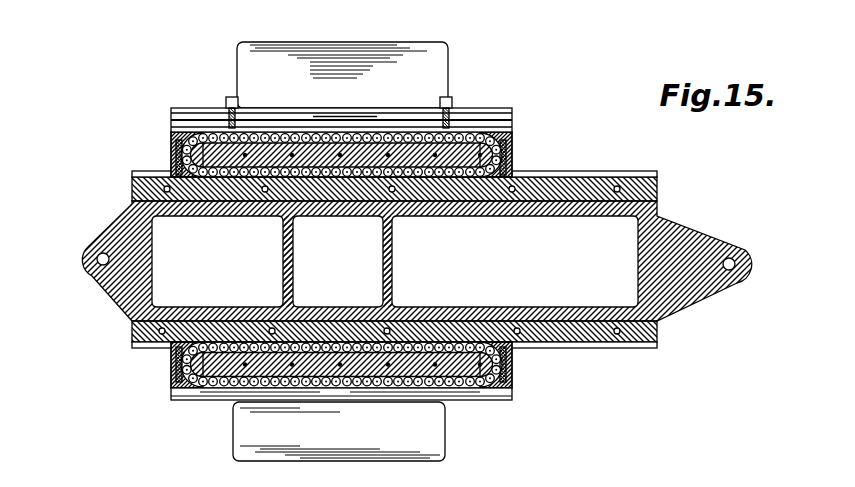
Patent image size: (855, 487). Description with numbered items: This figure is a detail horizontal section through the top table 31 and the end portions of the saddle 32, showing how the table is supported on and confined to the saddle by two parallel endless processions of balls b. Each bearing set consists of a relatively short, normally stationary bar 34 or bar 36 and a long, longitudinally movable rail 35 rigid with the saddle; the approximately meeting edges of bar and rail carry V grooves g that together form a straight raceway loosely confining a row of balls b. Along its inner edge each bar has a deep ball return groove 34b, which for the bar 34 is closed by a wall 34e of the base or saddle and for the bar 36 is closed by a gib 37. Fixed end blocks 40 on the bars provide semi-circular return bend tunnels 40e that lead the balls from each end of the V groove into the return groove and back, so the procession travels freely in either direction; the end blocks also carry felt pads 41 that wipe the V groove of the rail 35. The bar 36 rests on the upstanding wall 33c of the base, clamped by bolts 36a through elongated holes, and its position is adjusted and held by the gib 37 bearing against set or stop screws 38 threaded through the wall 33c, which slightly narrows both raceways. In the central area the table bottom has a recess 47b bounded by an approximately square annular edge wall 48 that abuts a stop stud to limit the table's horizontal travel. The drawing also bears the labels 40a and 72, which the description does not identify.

The top table 31 is at (509, 330).
The saddle 32 is at (430, 54).
The longitudinal upstanding wall 33c is at (473, 120).
The bearing bar 34 is at (222, 162).
The deep ball return groove 34b is at (266, 138).
The closing wall 34e is at (345, 393).
The bearing rail 35 is at (583, 187).
The bearing bar 36 is at (337, 133).
The bolts 36a is at (378, 133).
The gib 37 is at (253, 128).
The set or stop screws 38 is at (232, 98).
The end blocks 40 is at (173, 133).
The housing end block 40a is at (195, 170).
The return bend tunnels 40e is at (193, 133).
The felt pads 41 is at (171, 167).
The bottom recess 47b is at (427, 260).
The annular edge wall 48 is at (290, 285).
The mounting lug 72 is at (104, 235).
The balls b is at (308, 133).
The V grooves g is at (147, 172).